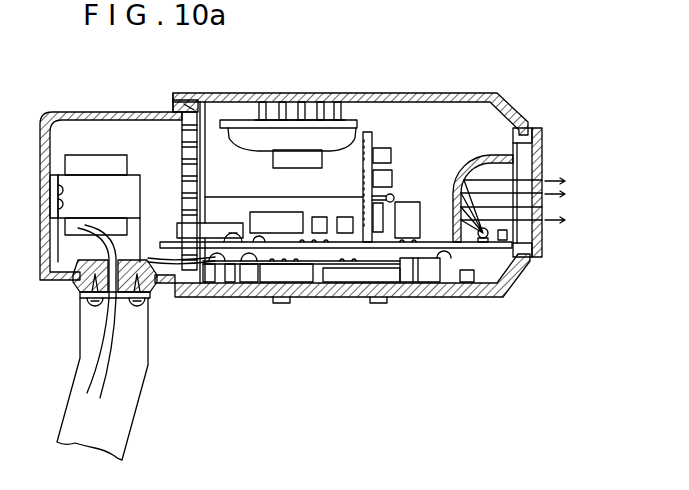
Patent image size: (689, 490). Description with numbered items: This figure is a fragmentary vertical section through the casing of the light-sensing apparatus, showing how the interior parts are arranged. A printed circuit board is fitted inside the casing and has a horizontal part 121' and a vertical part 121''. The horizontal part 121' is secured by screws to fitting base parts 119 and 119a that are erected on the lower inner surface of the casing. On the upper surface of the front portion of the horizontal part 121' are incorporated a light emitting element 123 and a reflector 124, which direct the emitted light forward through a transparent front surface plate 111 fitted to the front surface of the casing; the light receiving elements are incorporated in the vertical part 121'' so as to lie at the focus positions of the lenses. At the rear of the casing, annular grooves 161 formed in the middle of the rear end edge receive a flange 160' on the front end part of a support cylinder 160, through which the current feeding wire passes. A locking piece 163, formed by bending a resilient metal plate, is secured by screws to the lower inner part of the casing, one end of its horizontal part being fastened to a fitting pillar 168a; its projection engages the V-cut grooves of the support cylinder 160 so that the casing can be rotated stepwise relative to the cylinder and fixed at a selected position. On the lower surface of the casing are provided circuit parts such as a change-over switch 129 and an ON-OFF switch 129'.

The support cylinder 160 is at (111, 174).
The flange 160' is at (203, 76).
The annular grooves 161 is at (190, 110).
The vertical part 121'' is at (430, 150).
The reflector 124 is at (488, 153).
The light emitting element 123 is at (495, 228).
The transparent front surface plate 111 is at (544, 232).
The horizontal part 121' is at (356, 291).
The fitting base part 119 is at (427, 274).
The ON-OFF switch 129' is at (361, 306).
The change-over switch 129 is at (292, 304).
The fitting base part 119a is at (233, 278).
The locking piece 163 is at (217, 278).
The fitting pillar 168a is at (212, 308).